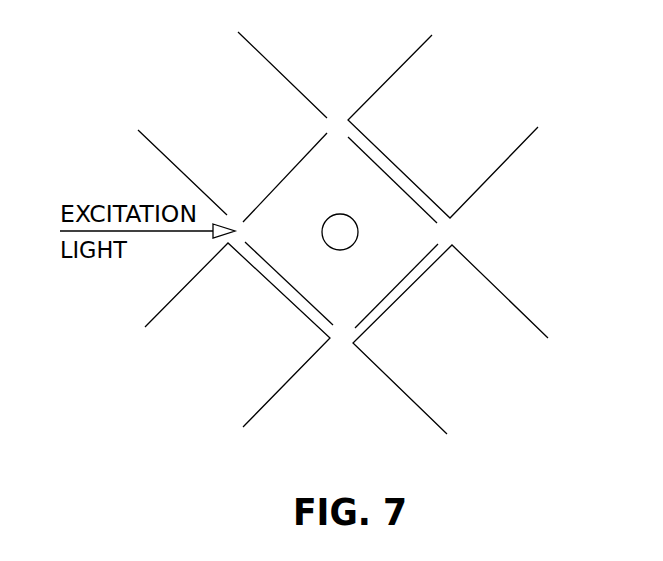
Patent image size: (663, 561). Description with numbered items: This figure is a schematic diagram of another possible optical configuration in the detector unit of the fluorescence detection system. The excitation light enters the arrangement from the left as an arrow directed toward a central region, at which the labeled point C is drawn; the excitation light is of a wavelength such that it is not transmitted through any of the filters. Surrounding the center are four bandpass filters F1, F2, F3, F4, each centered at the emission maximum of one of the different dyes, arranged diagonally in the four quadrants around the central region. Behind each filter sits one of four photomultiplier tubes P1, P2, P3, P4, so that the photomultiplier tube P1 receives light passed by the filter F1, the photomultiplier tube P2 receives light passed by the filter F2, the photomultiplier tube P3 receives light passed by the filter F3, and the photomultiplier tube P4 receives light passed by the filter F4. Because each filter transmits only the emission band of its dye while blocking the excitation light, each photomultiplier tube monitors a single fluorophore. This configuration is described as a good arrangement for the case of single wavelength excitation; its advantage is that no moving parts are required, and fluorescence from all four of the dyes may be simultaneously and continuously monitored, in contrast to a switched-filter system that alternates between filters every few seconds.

The photomultiplier tube P1 is at (232, 123).
The photomultiplier tube P2 is at (443, 126).
The photomultiplier tube P3 is at (450, 339).
The photomultiplier tube P4 is at (237, 335).
The bandpass filter F1 is at (285, 177).
The bandpass filter F2 is at (392, 180).
The bandpass filter F3 is at (396, 286).
The bandpass filter F4 is at (289, 283).
The center / sample position C is at (340, 232).